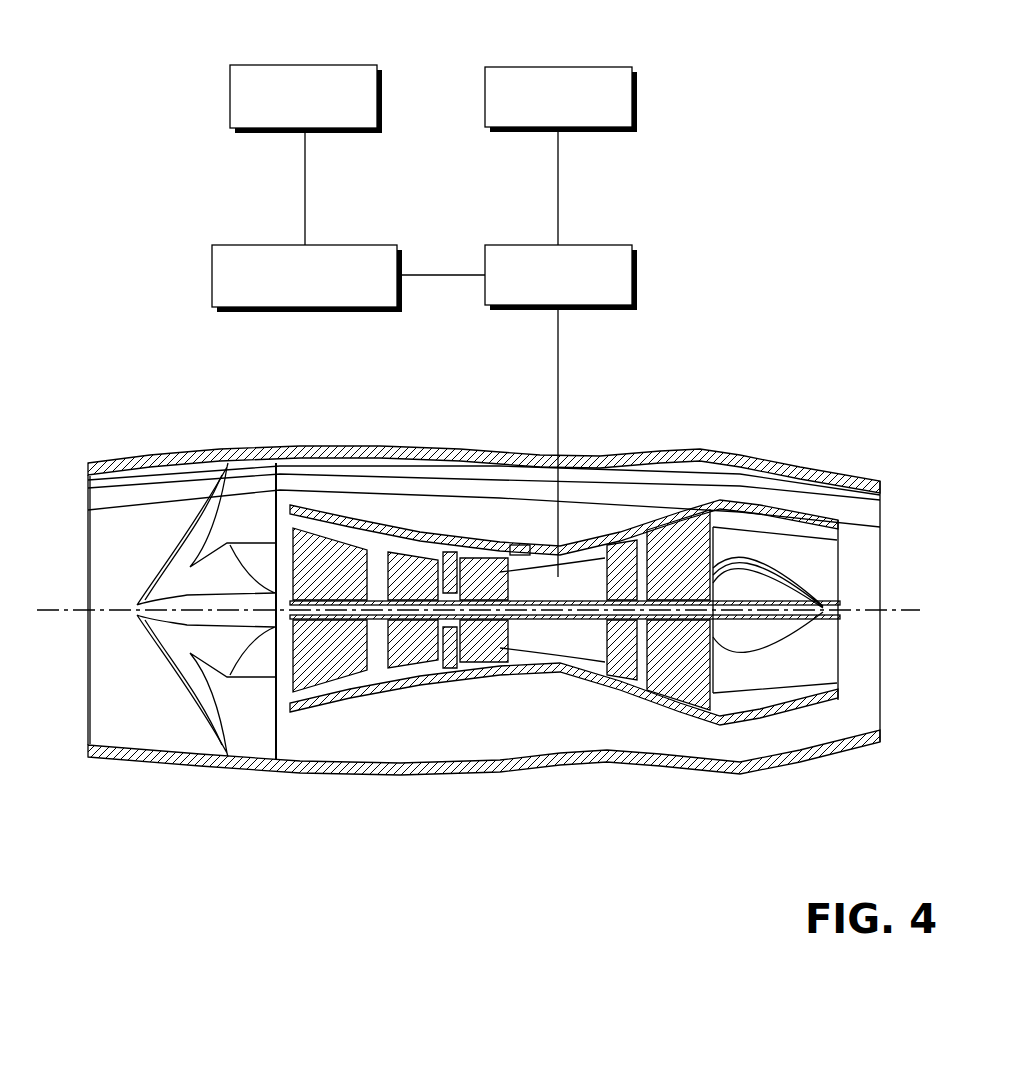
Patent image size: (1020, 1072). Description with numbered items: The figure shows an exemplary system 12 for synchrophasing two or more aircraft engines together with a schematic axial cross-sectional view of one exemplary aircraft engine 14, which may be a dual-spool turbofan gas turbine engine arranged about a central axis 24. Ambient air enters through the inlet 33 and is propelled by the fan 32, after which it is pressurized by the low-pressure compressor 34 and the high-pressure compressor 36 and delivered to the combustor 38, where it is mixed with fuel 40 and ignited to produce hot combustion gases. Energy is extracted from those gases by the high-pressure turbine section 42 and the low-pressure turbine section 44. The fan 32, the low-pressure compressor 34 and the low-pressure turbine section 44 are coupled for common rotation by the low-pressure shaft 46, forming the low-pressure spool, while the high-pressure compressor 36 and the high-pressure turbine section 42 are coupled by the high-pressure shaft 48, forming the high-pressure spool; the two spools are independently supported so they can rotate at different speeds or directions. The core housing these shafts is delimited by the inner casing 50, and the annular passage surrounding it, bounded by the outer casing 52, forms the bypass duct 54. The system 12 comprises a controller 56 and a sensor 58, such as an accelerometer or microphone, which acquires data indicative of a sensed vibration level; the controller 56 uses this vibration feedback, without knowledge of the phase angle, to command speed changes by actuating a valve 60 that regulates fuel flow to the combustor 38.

The system 12 is at (182, 86).
The aircraft engine 14 is at (182, 404).
The central axis 24 is at (78, 608).
The fan 32 is at (237, 745).
The inlet 33 is at (75, 722).
The low-pressure compressor 34 is at (317, 672).
The high-pressure compressor 36 is at (483, 652).
The combustor 38 is at (573, 662).
The fuel 40 is at (620, 67).
The high-pressure turbine section 42 is at (628, 668).
The low-pressure turbine section 44 is at (707, 687).
The low-pressure shaft 46 is at (380, 612).
The high-pressure shaft 48 is at (585, 625).
The inner casing 50 is at (727, 500).
The outer casing 52 is at (615, 455).
The bypass duct 54 is at (573, 737).
The controller 56 is at (365, 245).
The sensor 58 is at (362, 65).
The valve 60 is at (620, 245).